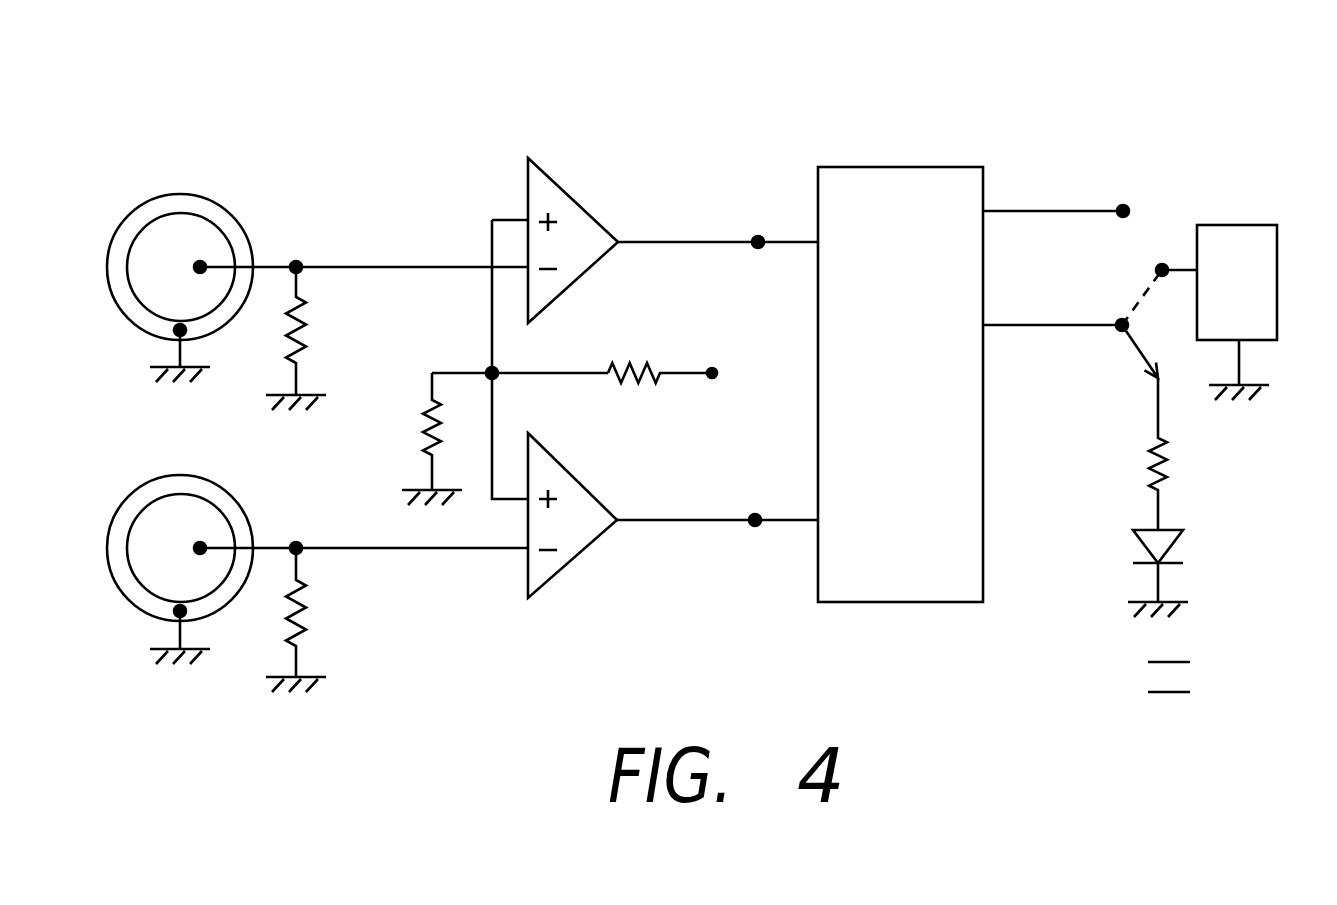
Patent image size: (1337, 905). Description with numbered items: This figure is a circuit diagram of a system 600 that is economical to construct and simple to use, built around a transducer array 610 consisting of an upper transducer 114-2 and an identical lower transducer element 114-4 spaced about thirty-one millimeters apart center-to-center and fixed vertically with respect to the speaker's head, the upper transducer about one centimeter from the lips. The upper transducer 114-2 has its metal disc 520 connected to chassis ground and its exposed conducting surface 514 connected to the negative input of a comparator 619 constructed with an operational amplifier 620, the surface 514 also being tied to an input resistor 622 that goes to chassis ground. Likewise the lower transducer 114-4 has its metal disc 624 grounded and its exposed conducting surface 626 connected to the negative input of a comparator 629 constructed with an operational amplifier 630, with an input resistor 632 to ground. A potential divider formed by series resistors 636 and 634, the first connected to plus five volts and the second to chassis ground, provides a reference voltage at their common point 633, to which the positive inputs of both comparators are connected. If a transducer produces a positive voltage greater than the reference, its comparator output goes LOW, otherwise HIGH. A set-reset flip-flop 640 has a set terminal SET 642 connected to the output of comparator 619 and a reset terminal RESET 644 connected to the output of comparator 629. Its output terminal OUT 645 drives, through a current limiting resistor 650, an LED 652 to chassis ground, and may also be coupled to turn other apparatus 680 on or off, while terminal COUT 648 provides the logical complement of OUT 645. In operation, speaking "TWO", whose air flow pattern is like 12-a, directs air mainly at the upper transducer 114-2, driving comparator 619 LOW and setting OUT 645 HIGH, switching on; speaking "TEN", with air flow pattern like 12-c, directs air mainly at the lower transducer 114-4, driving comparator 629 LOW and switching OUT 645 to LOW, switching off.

The system 600 is at (396, 70).
The transducer array 610 is at (188, 112).
The upper transducer 114-2 is at (115, 227).
The exposed conducting surface 514 is at (197, 238).
The metal disc 520 is at (233, 228).
The input resistor 622 is at (300, 345).
The comparator 619 is at (552, 166).
The operational amplifier 620 is at (578, 252).
The set terminal SET 642 is at (758, 242).
The common point 633 is at (492, 373).
The series resistor 636 is at (648, 368).
The series resistor 634 is at (432, 457).
The comparator 629 is at (562, 592).
The operational amplifier 630 is at (578, 517).
The reset terminal RESET 644 is at (755, 520).
The lower transducer element 114-4 is at (127, 498).
The metal disc 624 is at (155, 607).
The exposed conducting surface 626 is at (147, 557).
The input resistor 632 is at (300, 626).
The set-reset flip-flop 640 is at (925, 417).
The terminal COUT 648 is at (1123, 211).
The output terminal OUT 645 is at (1122, 325).
The other apparatus 680 is at (1265, 288).
The current limiting resistor 650 is at (1163, 482).
The LED 652 is at (1135, 545).
The air flow pattern 12-a is at (1133, 659).
The air flow pattern 12-c is at (1136, 689).